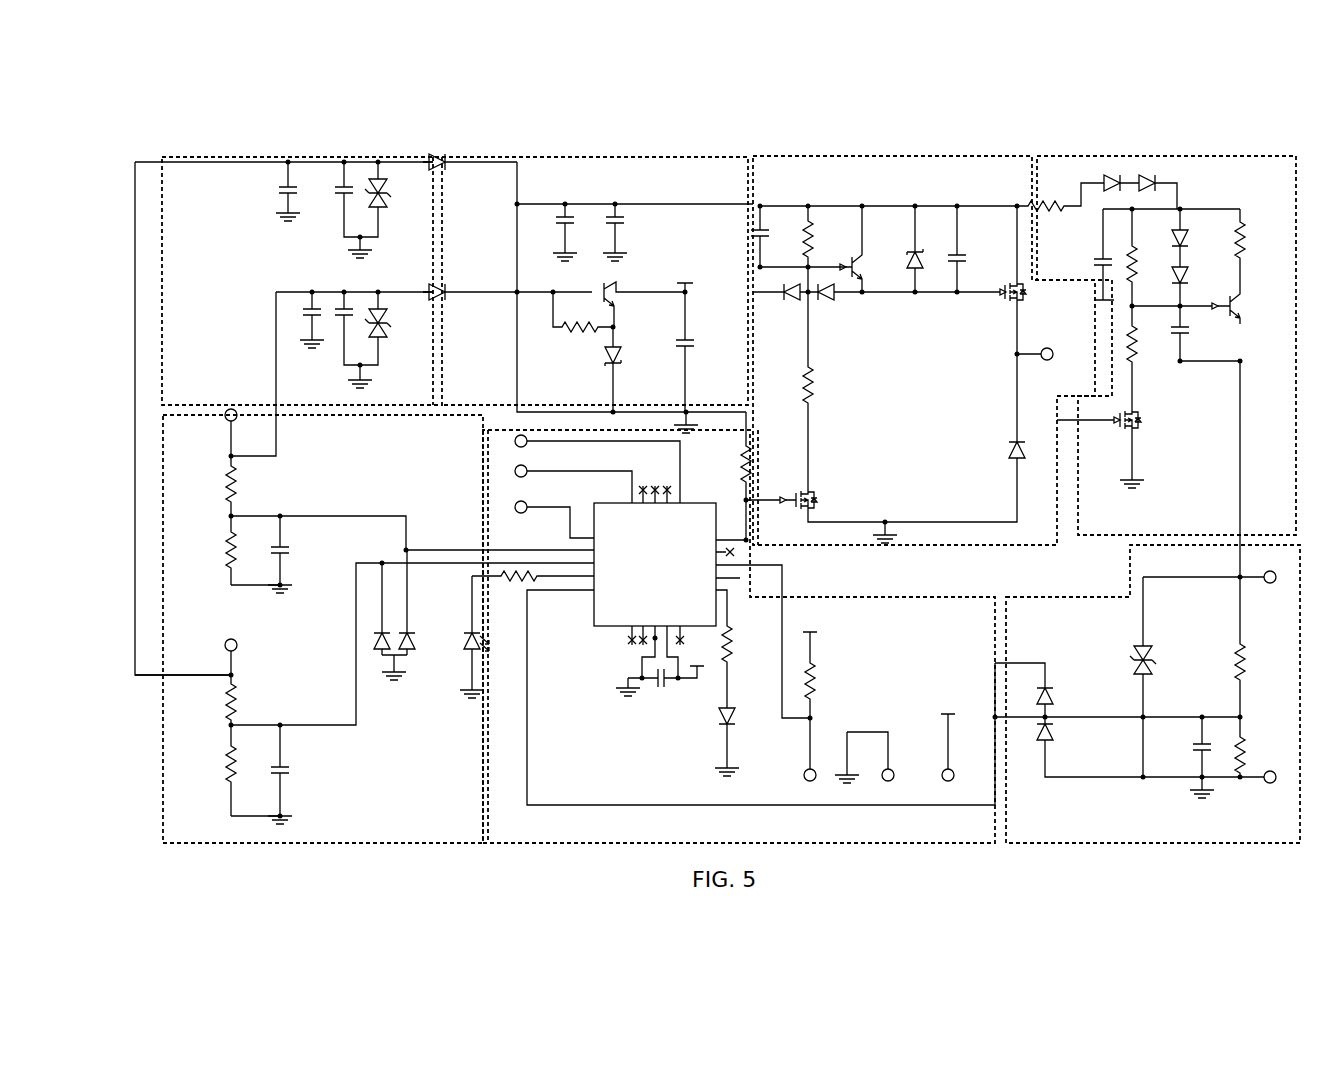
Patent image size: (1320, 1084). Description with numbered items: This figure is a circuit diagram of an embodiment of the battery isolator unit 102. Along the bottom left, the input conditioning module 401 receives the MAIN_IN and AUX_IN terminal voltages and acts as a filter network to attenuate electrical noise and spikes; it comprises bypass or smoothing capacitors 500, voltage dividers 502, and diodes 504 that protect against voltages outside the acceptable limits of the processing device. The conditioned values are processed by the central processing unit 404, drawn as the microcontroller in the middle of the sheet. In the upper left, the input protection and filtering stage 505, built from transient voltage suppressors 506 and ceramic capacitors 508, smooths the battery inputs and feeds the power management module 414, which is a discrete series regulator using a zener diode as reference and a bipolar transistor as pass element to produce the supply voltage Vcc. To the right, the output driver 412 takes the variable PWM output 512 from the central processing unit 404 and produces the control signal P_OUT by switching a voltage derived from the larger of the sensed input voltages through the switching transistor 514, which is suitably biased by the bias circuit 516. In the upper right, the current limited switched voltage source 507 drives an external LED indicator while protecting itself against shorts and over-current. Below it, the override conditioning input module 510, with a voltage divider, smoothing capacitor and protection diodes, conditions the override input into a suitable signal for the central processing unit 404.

The battery isolator unit 102 is at (212, 146).
The input protection and filtering stage 505 is at (342, 160).
The ceramic capacitors 508 is at (300, 246).
The transient voltage suppressors 506 is at (426, 213).
The power management module 414 is at (598, 157).
The output driver 412 is at (887, 157).
The current limited switched voltage source 507 is at (1093, 157).
The bypass or smoothing capacitors 500 is at (341, 544).
The voltage dividers 502 is at (226, 514).
The diodes 504 is at (365, 653).
The input conditioning module 401 is at (278, 845).
The central processing unit 404 is at (630, 640).
The variable PWM output 512 is at (746, 540).
The override conditioning input module 510 is at (1197, 845).
The switching transistor 514 is at (992, 337).
The bias circuit 516 is at (834, 344).